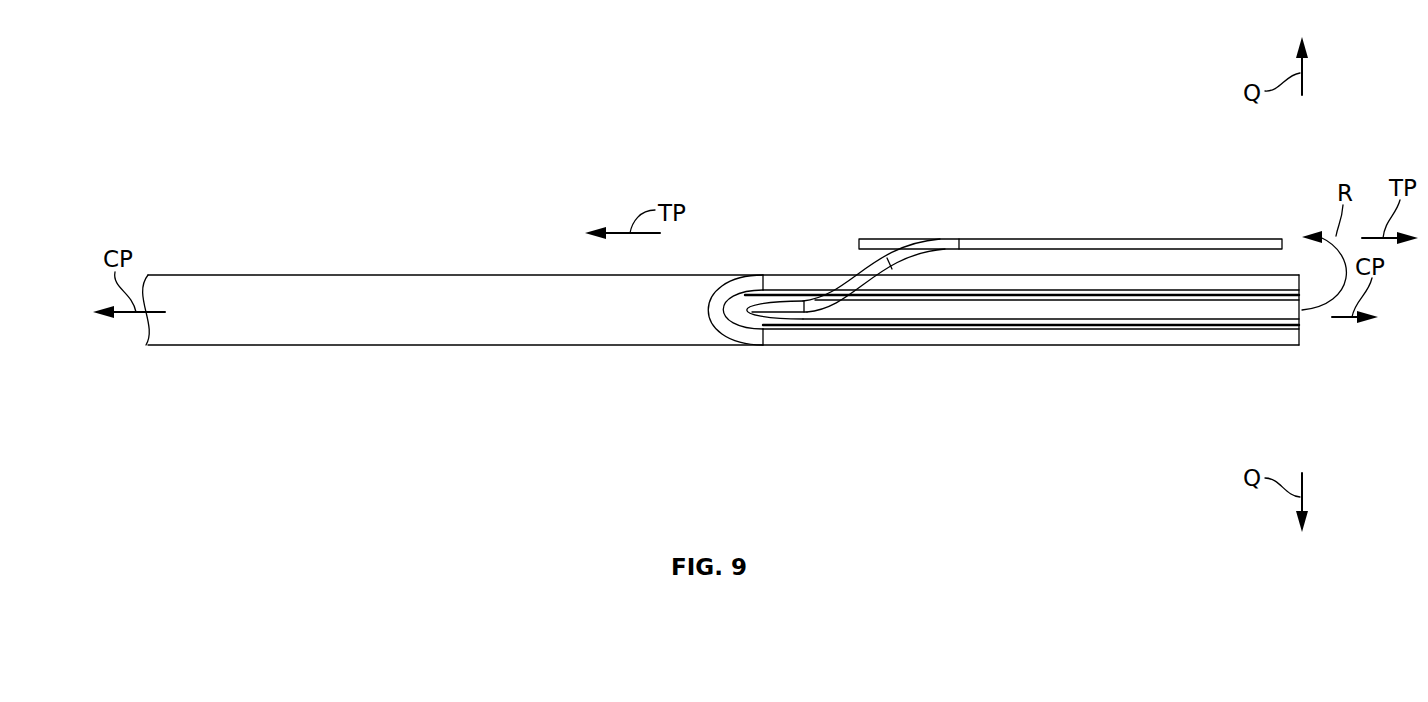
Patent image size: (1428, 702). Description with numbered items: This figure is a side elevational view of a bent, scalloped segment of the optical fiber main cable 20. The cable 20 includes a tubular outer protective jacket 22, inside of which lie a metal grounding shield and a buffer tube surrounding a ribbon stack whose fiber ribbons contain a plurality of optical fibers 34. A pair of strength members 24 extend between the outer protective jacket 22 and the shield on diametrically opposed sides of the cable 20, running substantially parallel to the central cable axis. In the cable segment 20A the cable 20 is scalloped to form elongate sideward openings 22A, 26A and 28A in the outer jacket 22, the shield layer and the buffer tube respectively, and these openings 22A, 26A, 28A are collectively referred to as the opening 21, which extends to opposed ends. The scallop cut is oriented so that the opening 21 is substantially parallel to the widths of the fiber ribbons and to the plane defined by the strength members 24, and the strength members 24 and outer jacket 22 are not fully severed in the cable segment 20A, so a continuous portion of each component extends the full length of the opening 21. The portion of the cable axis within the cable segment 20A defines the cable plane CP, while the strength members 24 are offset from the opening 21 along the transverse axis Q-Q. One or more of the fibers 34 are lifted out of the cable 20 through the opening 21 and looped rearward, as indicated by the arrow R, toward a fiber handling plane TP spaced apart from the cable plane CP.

The optical fiber main cable 20 is at (626, 130).
The cable segment 20A is at (1152, 362).
The opening 21 is at (1242, 362).
The outer protective jacket 22 is at (472, 332).
The sideward opening in the outer jacket 22A is at (872, 331).
The strength members 24 is at (958, 293).
The sideward opening in the shield layer 26A is at (870, 320).
The sideward opening in the buffer tube 28A is at (810, 313).
The optical fibers 34 is at (1172, 238).